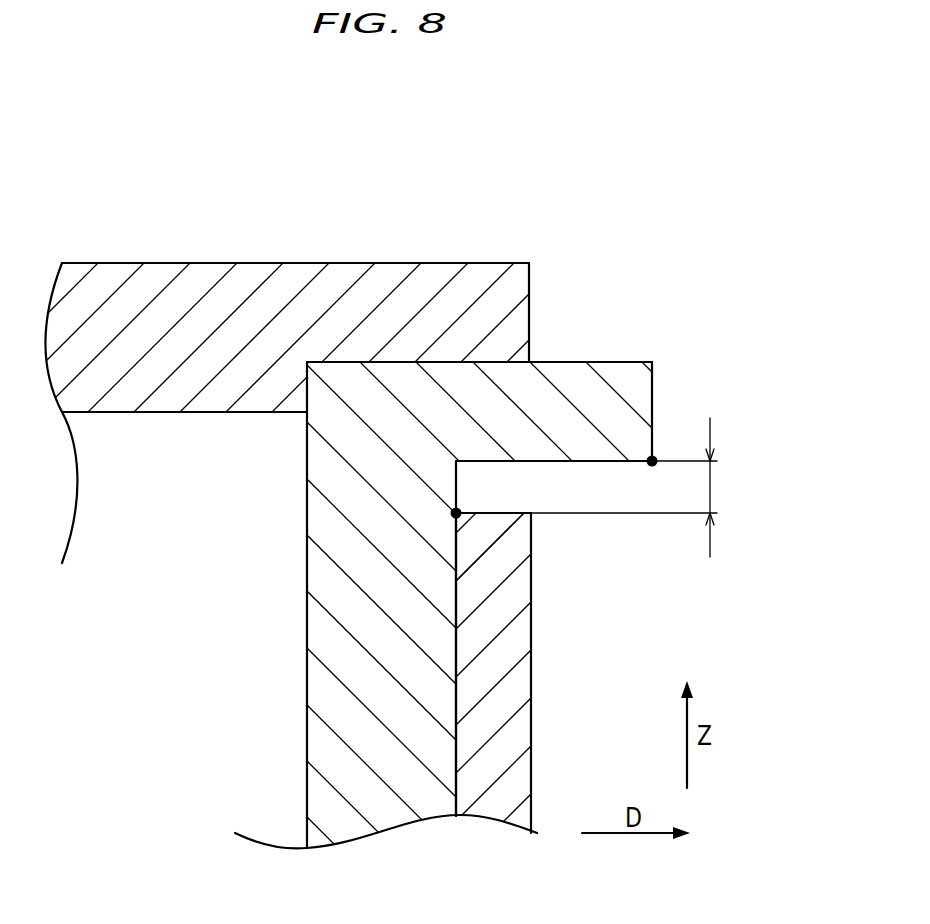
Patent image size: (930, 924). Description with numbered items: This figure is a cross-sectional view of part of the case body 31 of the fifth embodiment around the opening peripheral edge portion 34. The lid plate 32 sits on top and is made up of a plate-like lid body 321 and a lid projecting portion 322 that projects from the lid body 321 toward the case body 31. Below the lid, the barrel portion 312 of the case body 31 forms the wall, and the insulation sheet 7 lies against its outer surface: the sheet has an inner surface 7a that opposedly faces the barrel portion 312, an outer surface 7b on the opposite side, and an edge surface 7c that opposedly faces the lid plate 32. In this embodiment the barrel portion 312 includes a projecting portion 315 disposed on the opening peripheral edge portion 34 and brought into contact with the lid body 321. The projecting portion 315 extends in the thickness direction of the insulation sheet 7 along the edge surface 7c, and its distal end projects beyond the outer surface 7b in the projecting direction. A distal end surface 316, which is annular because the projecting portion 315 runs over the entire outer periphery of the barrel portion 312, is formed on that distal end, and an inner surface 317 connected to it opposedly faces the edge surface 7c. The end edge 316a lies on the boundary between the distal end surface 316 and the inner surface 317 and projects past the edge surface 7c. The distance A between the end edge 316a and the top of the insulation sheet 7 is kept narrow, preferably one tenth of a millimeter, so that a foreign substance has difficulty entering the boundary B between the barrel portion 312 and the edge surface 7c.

The case body 31 is at (287, 742).
The lid plate 32 is at (285, 163).
The lid body 321 is at (263, 308).
The lid projecting portion 322 is at (213, 412).
The opening peripheral edge portion 34 is at (407, 362).
The barrel portion 312 is at (323, 590).
The projecting portion 315 is at (627, 343).
The distal end surface 316 is at (654, 390).
The end edge 316a is at (652, 461).
The inner surface 317 is at (612, 462).
The boundary B is at (456, 513).
The distance A is at (634, 487).
The insulation sheet 7 is at (635, 577).
The inner surface 7a is at (468, 648).
The outer surface 7b is at (533, 613).
The edge surface 7c is at (490, 508).